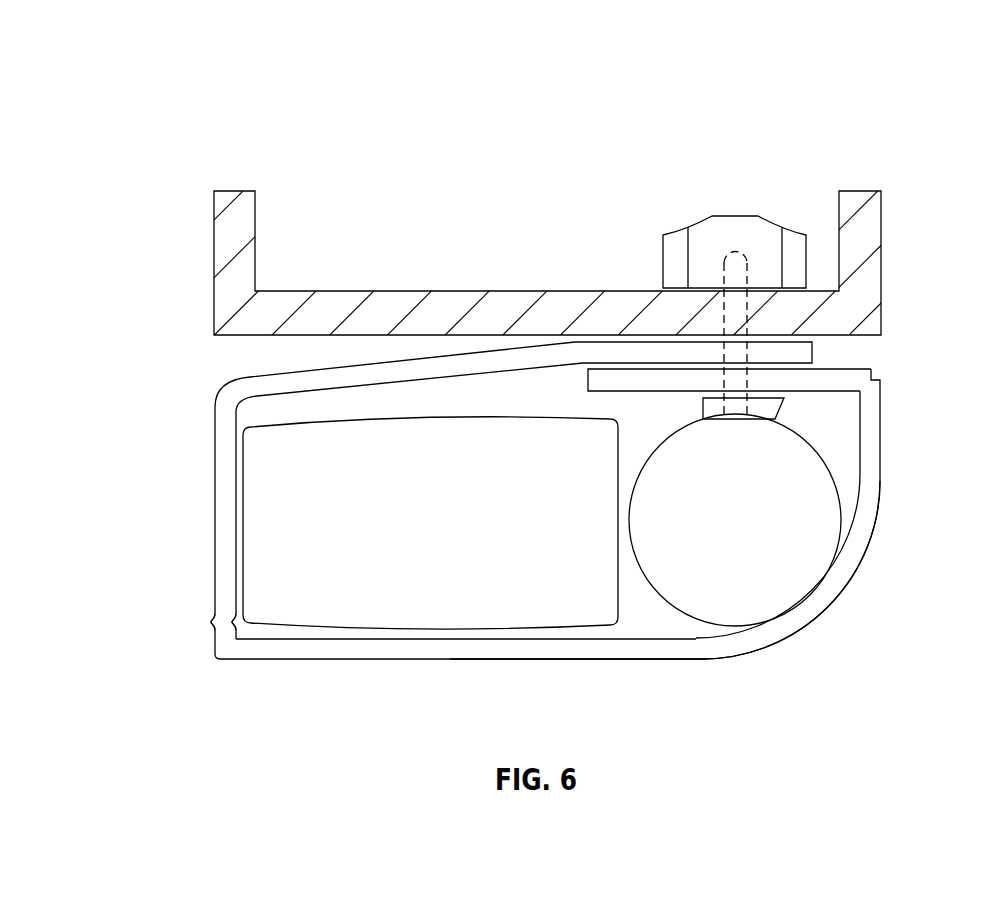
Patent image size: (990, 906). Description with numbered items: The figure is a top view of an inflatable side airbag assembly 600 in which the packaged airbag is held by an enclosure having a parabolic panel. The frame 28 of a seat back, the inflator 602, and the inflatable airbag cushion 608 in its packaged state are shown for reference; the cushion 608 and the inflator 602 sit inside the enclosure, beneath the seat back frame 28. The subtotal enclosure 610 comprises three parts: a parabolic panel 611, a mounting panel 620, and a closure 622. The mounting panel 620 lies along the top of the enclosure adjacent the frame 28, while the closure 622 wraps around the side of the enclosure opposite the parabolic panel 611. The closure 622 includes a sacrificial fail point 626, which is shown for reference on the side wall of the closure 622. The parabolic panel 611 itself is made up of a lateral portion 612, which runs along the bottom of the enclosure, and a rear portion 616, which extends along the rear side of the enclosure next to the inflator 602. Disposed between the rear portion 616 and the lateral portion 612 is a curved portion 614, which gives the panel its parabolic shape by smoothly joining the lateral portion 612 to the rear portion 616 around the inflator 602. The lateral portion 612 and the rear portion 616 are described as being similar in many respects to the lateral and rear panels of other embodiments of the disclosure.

The inflatable side airbag assembly 600 is at (838, 62).
The frame 28 is at (342, 291).
The inflator 602 is at (757, 537).
The inflatable airbag cushion 608 is at (456, 537).
The subtotal enclosure 610 is at (350, 660).
The parabolic panel 611 is at (435, 660).
The lateral portion 612 is at (505, 660).
The curved portion 614 is at (830, 605).
The rear portion 616 is at (882, 425).
The mounting panel 620 is at (848, 368).
The closure 622 is at (215, 517).
The sacrificial fail point 626 is at (198, 620).